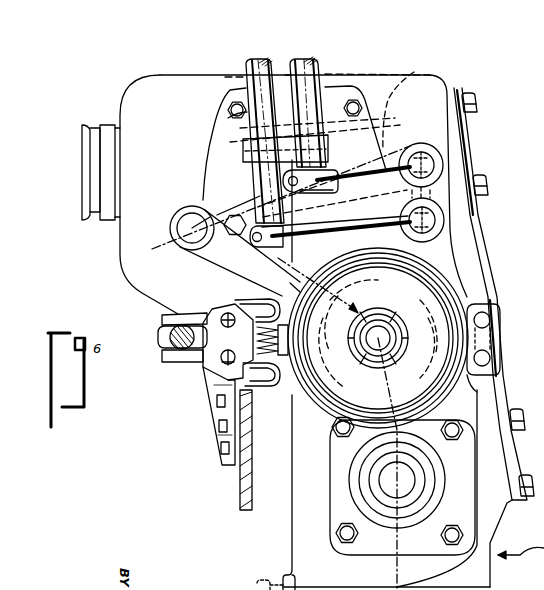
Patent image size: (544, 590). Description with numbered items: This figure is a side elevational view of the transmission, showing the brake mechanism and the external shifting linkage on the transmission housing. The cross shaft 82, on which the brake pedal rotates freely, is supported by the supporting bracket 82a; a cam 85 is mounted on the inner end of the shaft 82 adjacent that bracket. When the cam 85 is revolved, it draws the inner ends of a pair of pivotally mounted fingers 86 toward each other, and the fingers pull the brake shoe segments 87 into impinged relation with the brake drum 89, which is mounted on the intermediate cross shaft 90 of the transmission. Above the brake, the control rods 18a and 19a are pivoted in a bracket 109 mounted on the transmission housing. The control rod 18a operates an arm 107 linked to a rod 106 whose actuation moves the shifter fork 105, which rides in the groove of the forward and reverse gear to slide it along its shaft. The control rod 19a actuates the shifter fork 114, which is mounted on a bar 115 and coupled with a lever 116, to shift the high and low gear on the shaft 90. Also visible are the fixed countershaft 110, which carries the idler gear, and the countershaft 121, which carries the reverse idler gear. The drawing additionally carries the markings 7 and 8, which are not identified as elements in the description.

The shaft cylinder 7 is at (297, 53).
The axis of rotation 8 is at (324, 286).
The control rod 18a is at (322, 70).
The control rod 19a is at (246, 132).
The cross shaft 82 is at (200, 366).
The supporting bracket 82a is at (212, 395).
The cam 85 is at (178, 340).
The pivotally mounted fingers 86 is at (177, 316).
The brake shoe segments 87 is at (310, 405).
The brake drum 89 is at (310, 372).
The intermediate cross shaft 90 is at (385, 330).
The shifter fork 105 is at (410, 103).
The rod 106 is at (445, 163).
The arm 107 is at (346, 168).
The bracket 109 is at (245, 152).
The fixed countershaft 110 is at (232, 272).
The shifter fork 114 is at (455, 248).
The bar 115 is at (450, 215).
The lever 116 is at (330, 225).
The countershaft 121 is at (183, 234).